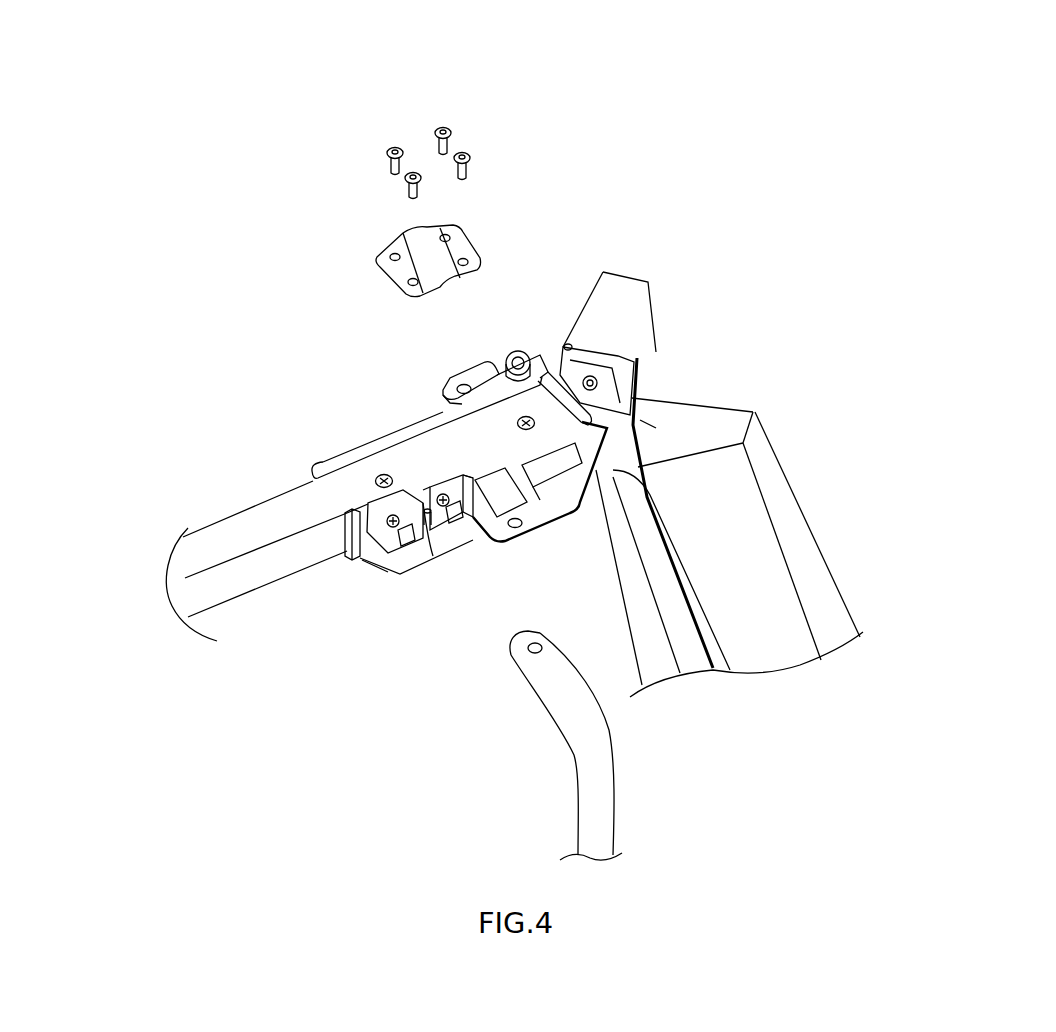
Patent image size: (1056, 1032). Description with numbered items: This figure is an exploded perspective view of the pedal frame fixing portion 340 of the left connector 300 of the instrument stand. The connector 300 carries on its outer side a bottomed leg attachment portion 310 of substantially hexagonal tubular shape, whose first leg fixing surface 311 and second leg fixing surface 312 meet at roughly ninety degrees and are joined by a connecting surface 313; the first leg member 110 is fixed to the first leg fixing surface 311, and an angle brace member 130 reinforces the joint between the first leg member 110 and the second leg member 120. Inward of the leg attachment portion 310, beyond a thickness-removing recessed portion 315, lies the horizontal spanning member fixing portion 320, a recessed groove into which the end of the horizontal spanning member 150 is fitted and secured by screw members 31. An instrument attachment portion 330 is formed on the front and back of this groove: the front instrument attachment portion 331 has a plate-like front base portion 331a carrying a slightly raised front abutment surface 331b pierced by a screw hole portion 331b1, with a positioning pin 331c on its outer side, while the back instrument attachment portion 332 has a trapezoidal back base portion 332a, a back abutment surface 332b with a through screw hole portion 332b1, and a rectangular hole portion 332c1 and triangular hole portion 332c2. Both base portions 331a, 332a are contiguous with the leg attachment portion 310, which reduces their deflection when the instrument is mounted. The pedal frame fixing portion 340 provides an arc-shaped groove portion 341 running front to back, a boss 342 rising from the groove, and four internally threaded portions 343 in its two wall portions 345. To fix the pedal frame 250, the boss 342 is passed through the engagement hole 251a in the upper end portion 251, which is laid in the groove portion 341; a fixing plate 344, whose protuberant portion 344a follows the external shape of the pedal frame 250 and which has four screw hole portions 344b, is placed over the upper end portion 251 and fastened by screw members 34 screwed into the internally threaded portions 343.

The screw member 34 is at (388, 155).
The fixing plate 344 is at (395, 212).
The bracket plate portion 344a is at (425, 253).
The screw hole portion 344b is at (388, 258).
The front instrument attachment portion 331 is at (507, 338).
The instrument attachment portion 330 is at (633, 140).
The thickness-removing recessed portion 315 is at (569, 343).
The front base portion 331a is at (500, 372).
The positioning pin 331c is at (521, 350).
The first leg member 110 is at (628, 285).
The first leg fixing surface 311 is at (603, 347).
The leg attachment portion 310 is at (650, 357).
The connecting surface 313 is at (613, 385).
The angle brace member 130 is at (647, 408).
The second leg fixing surface 312 is at (652, 412).
The substantially triangular hole portion 332c2 is at (645, 463).
The second leg member 120 is at (768, 477).
The back base portion 332a is at (558, 481).
The back abutment surface 332b is at (525, 492).
The screw hole portion 332b1 is at (516, 528).
The substantially rectangular hole portion 332c1 is at (578, 520).
The horizontal spanning member fixing portion 320 is at (327, 467).
The front abutment surface 331b is at (443, 383).
The screw hole portion 331b1 is at (463, 384).
The screw member 31 is at (380, 474).
The wall portion 345 is at (395, 514).
The horizontal spanning member 150 is at (220, 523).
The internally threaded portion 343 is at (355, 562).
The boss 342 is at (418, 552).
The groove portion 341 is at (443, 552).
The pedal frame fixing portion 340 is at (373, 568).
The connector 300 is at (405, 647).
The engagement hole 251a is at (533, 654).
The upper end portion 251 is at (557, 727).
The pedal frame 250 is at (577, 828).
The back instrument attachment portion 332 is at (557, 540).